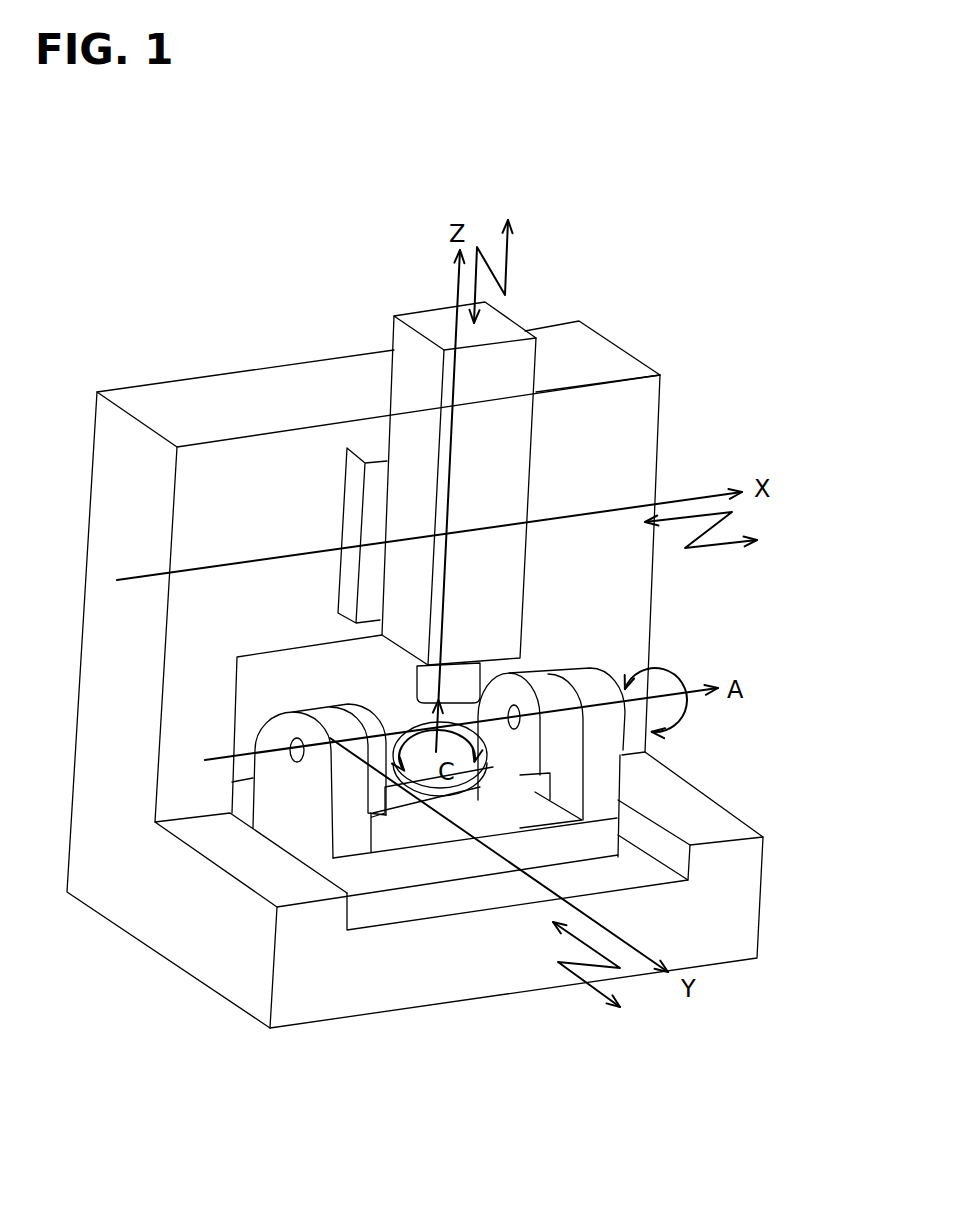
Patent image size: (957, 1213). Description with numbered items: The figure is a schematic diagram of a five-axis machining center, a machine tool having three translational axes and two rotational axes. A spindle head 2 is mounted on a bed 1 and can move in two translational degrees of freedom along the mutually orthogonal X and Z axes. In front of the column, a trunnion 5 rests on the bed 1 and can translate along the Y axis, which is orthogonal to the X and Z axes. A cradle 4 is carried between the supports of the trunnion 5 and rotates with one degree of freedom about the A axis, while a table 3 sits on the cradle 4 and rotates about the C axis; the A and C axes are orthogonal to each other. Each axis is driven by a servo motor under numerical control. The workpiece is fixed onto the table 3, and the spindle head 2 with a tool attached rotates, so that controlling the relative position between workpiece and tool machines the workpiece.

The bed 1 is at (170, 945).
The spindle head 2 is at (422, 689).
The table 3 is at (484, 776).
The cradle 4 is at (560, 787).
The trunnion 5 is at (280, 788).